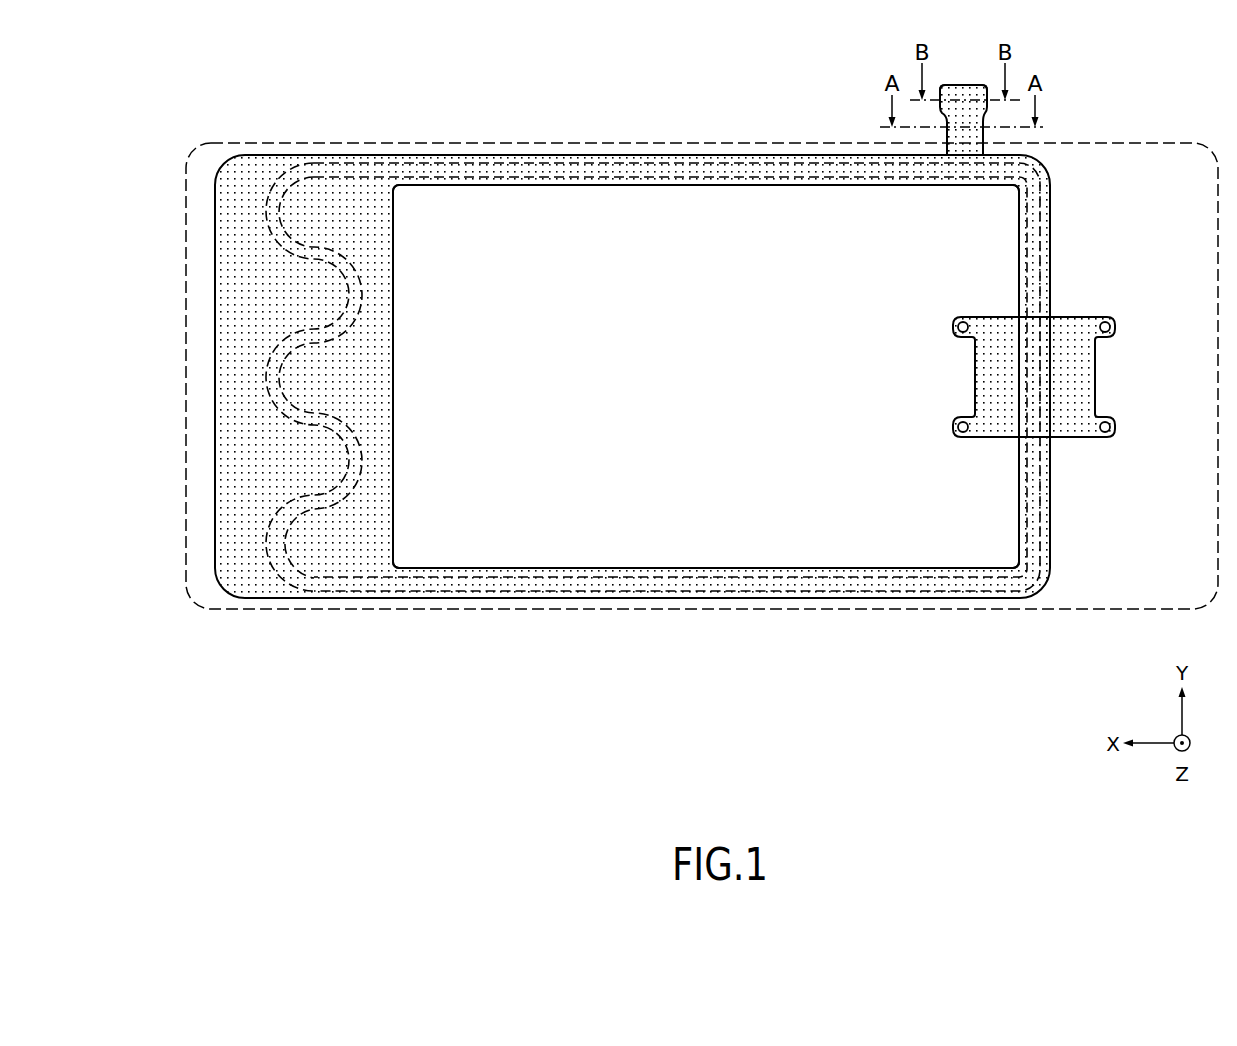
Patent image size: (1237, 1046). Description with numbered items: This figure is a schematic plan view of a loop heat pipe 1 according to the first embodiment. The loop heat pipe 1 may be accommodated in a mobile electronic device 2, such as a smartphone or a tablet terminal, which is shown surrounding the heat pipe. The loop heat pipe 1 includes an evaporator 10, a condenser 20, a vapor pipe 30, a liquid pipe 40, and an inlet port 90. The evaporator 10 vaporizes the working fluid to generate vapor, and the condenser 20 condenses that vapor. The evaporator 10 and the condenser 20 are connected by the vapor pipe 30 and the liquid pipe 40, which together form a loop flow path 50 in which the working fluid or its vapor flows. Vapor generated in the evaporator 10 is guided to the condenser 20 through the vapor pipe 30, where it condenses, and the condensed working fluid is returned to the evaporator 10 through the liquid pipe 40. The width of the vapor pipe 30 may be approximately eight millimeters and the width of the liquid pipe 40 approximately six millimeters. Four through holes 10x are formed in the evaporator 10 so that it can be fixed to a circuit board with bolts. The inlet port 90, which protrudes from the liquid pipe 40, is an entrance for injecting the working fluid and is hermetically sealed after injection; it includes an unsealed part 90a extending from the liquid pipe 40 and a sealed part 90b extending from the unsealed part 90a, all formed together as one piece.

The loop heat pipe 1 is at (759, 92).
The mobile electronic device 2 is at (264, 143).
The evaporator 10 is at (940, 318).
The through holes 10x is at (1109, 321).
The condenser 20 is at (402, 188).
The vapor pipe 30 is at (737, 598).
The liquid pipe 40 is at (664, 155).
The loop flow path 50 is at (435, 158).
The inlet port 90 is at (1110, 85).
The unsealed part 90a is at (1050, 115).
The sealed part 90b is at (1050, 85).